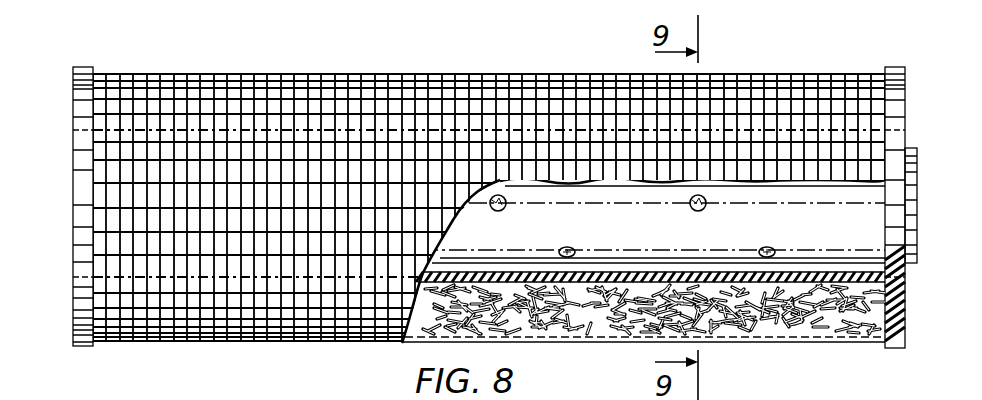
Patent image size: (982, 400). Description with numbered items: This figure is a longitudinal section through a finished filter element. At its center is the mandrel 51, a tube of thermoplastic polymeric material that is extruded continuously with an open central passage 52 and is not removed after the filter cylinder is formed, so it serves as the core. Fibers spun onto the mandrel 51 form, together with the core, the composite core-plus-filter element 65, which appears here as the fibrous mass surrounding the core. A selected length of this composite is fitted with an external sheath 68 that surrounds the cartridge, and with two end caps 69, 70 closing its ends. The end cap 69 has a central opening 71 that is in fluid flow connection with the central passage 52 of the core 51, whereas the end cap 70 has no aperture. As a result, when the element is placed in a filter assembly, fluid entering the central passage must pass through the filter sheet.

The external sheath 68 is at (289, 73).
The end cap 70 is at (73, 106).
The end cap 69 is at (905, 86).
The central opening 71 is at (910, 210).
The mandrel 51 is at (816, 279).
The central passage 52 is at (606, 282).
The composite core-plus-filter element 65 is at (809, 318).